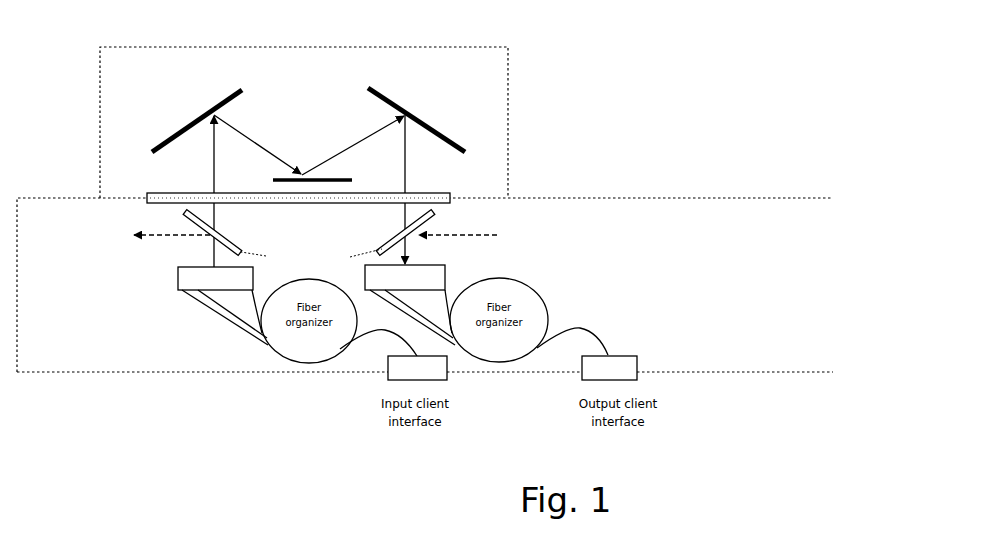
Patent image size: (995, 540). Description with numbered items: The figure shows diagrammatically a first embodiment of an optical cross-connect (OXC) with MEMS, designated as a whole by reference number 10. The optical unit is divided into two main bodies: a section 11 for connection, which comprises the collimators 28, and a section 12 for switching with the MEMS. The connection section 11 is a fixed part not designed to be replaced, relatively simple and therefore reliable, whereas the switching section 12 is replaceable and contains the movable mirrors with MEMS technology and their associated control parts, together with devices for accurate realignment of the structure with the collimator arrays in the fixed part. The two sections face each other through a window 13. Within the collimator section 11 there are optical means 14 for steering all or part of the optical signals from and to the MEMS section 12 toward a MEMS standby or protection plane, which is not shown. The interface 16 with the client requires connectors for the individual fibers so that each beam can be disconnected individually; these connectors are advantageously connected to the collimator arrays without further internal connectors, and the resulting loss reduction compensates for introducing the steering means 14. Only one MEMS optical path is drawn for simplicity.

The OXC 10 is at (609, 93).
The section for connection 11 is at (157, 365).
The section for switching with the MEMS 12 is at (502, 62).
The window 13 is at (453, 196).
The optical means for steering 14 is at (382, 248).
The interface with the client 16 is at (440, 372).
The collimators 28 is at (183, 288).